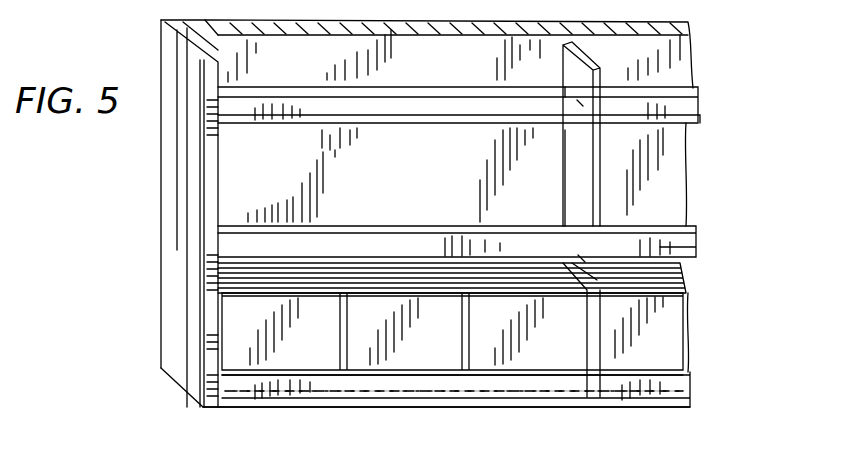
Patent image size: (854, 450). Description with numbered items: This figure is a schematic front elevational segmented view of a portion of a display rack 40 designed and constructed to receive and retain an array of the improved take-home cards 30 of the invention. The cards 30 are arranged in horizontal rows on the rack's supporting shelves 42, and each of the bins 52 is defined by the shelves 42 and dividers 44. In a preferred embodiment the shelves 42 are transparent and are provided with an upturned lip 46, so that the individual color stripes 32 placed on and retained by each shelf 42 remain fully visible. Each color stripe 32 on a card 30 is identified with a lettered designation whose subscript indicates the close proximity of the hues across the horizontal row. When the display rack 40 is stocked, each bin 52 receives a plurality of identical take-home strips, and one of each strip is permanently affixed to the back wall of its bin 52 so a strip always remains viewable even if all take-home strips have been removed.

The take-home card 30 is at (222, 342).
The color stripe 32 is at (325, 363).
The display rack 40 is at (170, 168).
The shelf 42 is at (700, 246).
The divider 44 is at (685, 266).
The upturned lip 46 is at (683, 389).
The bin 52 is at (559, 209).